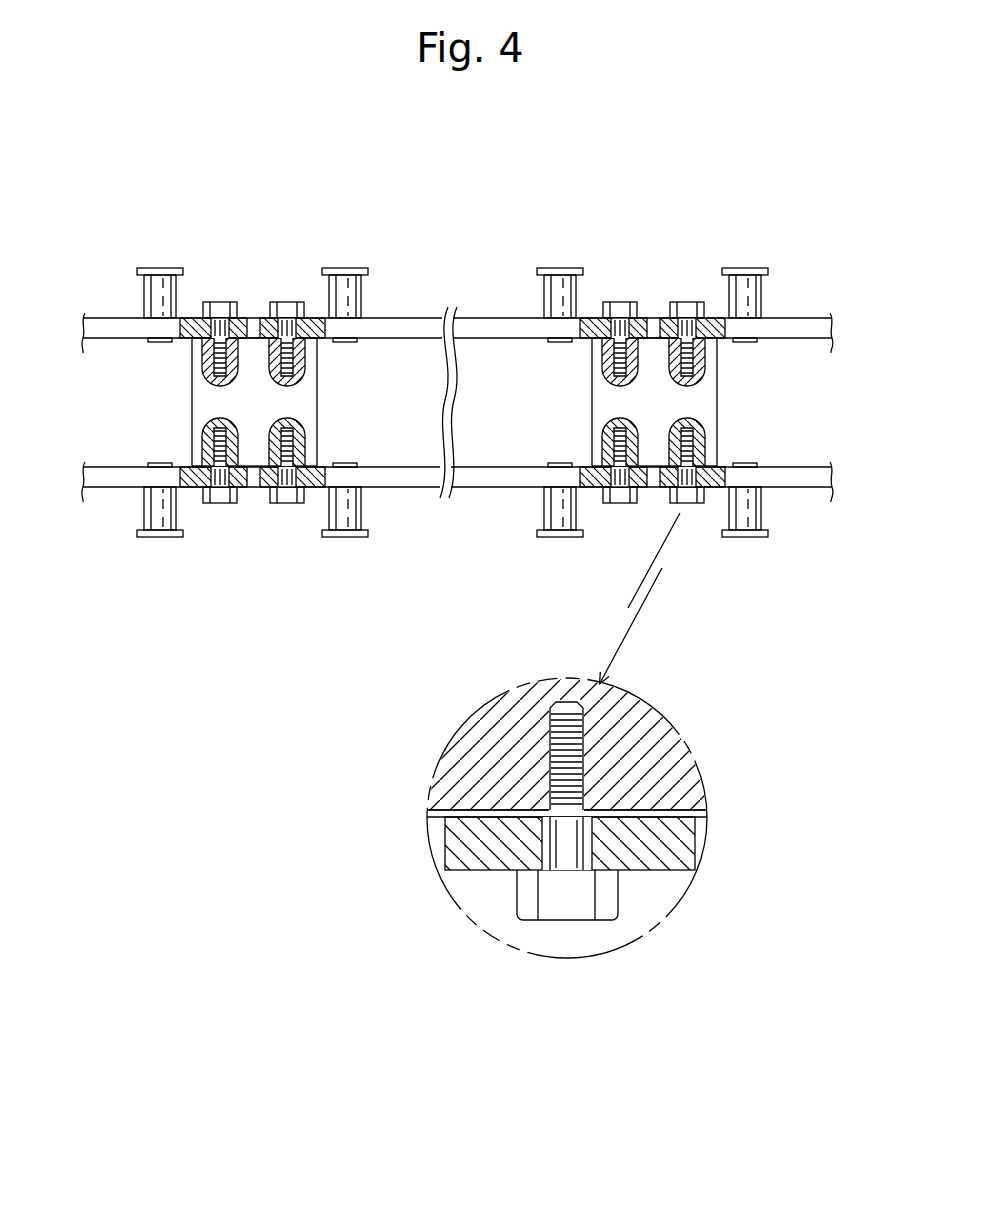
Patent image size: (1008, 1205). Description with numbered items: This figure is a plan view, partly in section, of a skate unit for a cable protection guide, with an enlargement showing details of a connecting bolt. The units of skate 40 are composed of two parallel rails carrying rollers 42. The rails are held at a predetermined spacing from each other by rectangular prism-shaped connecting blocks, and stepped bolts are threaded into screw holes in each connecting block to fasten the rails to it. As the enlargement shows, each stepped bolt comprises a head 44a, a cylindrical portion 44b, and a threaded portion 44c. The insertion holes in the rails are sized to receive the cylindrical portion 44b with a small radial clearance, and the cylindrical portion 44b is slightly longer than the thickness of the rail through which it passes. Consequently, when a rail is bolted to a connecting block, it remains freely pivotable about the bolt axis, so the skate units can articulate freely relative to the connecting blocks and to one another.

The skate 40 is at (477, 430).
The rollers 42 is at (150, 290).
The head 44a is at (615, 888).
The cylindrical portion 44b is at (582, 842).
The threaded portion 44c is at (580, 758).